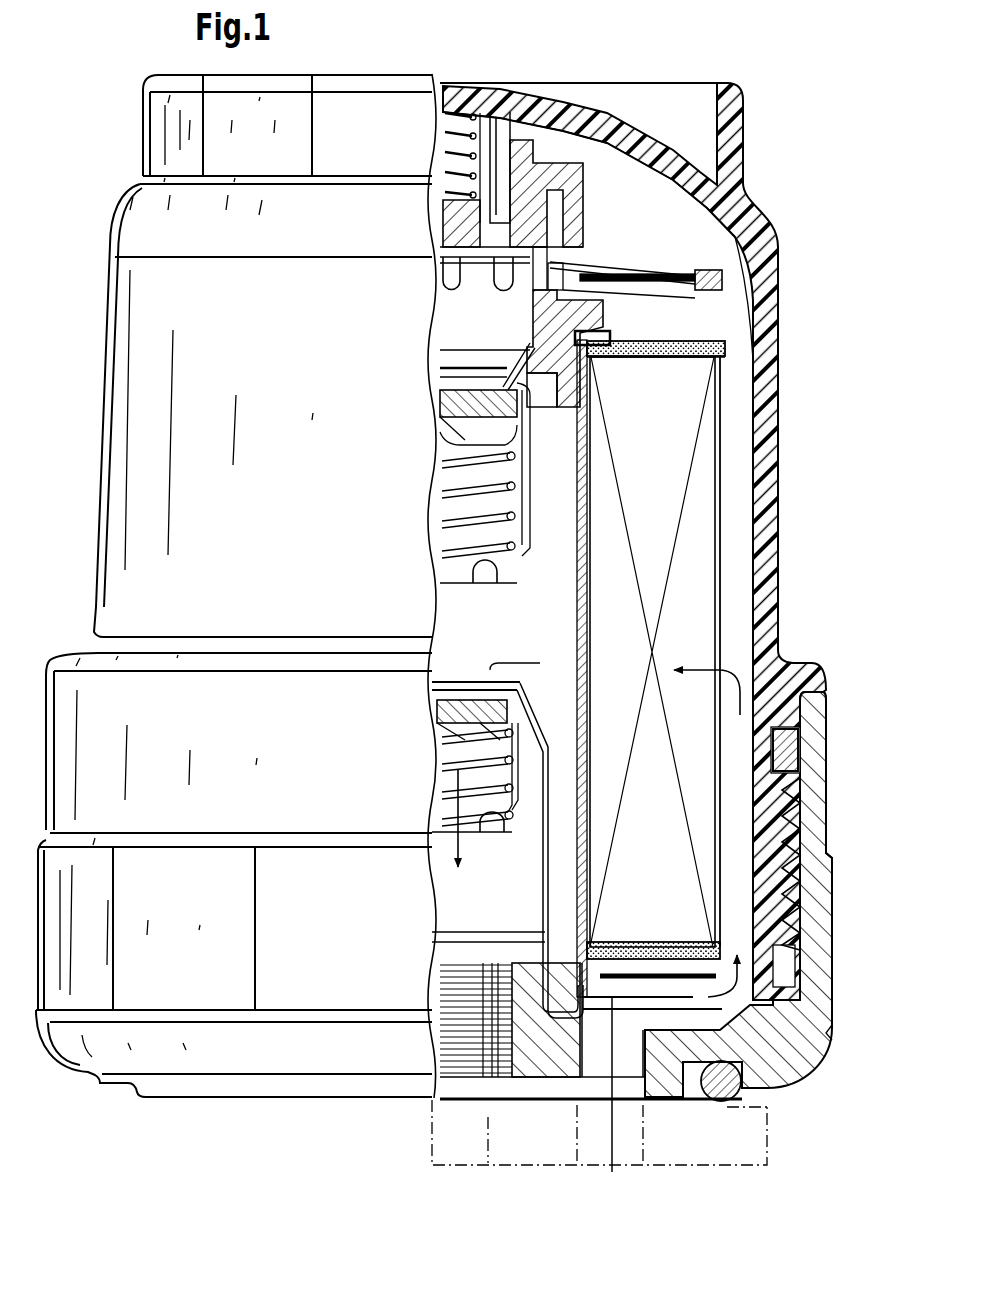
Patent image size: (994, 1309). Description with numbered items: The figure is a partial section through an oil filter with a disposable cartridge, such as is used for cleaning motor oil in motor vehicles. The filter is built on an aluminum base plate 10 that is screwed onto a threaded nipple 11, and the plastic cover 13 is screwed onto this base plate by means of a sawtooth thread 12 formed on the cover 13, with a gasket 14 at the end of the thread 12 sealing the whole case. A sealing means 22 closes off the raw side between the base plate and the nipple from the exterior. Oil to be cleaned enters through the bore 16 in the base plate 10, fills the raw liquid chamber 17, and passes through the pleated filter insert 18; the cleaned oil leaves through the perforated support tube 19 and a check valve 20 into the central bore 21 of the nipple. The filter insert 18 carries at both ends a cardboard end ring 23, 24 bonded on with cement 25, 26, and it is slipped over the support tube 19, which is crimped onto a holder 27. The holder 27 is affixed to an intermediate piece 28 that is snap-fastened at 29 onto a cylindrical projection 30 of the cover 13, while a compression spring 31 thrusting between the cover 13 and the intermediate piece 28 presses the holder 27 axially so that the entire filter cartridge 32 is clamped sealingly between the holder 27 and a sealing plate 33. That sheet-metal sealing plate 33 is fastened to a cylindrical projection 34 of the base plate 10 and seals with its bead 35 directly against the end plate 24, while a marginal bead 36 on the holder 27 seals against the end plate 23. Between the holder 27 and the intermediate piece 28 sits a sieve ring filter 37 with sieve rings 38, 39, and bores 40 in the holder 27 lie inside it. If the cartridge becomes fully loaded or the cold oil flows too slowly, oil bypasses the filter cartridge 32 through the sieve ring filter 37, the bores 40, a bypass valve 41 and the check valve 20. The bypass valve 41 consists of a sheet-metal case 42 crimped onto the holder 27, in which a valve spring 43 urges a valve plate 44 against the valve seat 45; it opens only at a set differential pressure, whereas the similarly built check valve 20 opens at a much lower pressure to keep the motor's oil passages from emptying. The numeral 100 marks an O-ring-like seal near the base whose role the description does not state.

The base plate 10 is at (810, 990).
The threaded nipple 11 is at (780, 1140).
The sawtooth thread 12 is at (787, 827).
The cover 13 is at (767, 508).
The gasket 14 is at (798, 753).
The bore 16 is at (630, 1067).
The raw liquid chamber 17 is at (730, 920).
The pleated filter insert 18 is at (687, 570).
The support tube 19 is at (590, 630).
The check valve 20 is at (463, 673).
The central bore 21 is at (473, 1140).
The sealing means 22 is at (740, 1102).
The end ring 23 is at (748, 343).
The end ring 24 is at (822, 1033).
The cement 25 is at (673, 947).
The cement 26 is at (727, 360).
The holder 27 is at (630, 320).
The intermediate piece 28 is at (617, 132).
The snap fastening 29 is at (497, 133).
The cylindrical projection 30 is at (537, 92).
The compression spring 31 is at (486, 84).
The filter cartridge 32 is at (727, 433).
The sealing plate 33 is at (597, 947).
The cylindrical projection 34 is at (530, 947).
The bead 35 is at (623, 947).
The marginal bead 36 is at (673, 333).
The sieve ring filter 37 is at (677, 263).
The sieve ring 38 is at (627, 260).
The sieve ring 39 is at (653, 260).
The bores 40 is at (420, 263).
The bypass valve 41 is at (542, 447).
The sheet-metal case 42 is at (520, 473).
The valve spring 43 is at (520, 503).
The valve plate 44 is at (457, 380).
The valve seat 45 is at (503, 380).
The O-ring 100 is at (817, 1050).